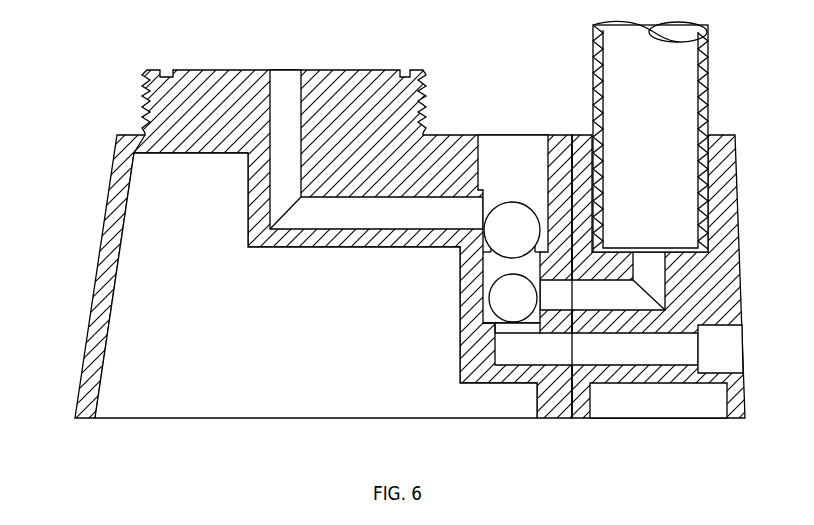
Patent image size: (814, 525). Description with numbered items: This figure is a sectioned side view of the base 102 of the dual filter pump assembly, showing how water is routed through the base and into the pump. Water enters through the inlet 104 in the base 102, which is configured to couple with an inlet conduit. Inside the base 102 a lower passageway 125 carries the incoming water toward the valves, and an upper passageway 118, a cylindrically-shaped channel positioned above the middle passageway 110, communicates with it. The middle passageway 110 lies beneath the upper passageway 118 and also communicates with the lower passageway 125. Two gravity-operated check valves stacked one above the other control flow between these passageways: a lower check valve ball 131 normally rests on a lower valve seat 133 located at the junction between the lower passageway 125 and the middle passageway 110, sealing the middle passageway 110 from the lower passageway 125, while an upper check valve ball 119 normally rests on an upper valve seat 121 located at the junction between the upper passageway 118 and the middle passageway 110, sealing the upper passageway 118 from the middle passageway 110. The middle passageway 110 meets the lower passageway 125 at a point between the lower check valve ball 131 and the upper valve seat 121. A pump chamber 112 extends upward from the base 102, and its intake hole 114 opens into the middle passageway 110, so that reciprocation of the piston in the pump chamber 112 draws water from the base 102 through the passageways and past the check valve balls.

The base 102 is at (100, 250).
The inlet 104 is at (720, 365).
The middle passageway 110 is at (643, 305).
The pump chamber 112 is at (708, 88).
The intake hole 114 is at (648, 152).
The upper passageway 118 is at (310, 212).
The upper check valve ball 119 is at (512, 230).
The upper valve seat 121 is at (546, 210).
The lower passageway 125 is at (602, 355).
The lower check valve ball 131 is at (513, 298).
The lower valve seat 133 is at (495, 322).